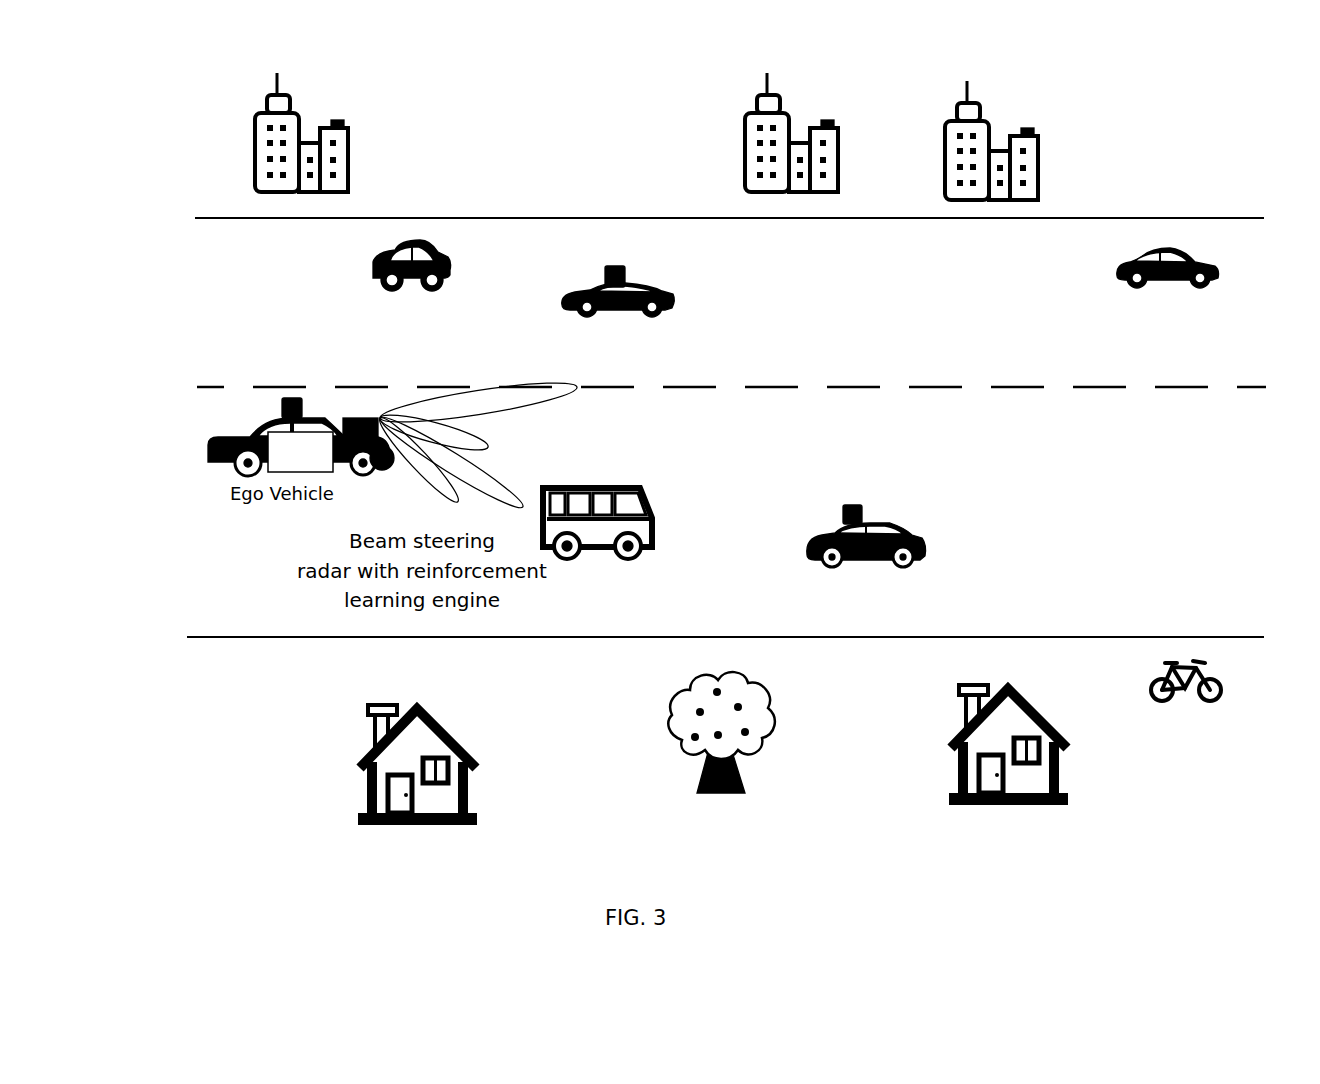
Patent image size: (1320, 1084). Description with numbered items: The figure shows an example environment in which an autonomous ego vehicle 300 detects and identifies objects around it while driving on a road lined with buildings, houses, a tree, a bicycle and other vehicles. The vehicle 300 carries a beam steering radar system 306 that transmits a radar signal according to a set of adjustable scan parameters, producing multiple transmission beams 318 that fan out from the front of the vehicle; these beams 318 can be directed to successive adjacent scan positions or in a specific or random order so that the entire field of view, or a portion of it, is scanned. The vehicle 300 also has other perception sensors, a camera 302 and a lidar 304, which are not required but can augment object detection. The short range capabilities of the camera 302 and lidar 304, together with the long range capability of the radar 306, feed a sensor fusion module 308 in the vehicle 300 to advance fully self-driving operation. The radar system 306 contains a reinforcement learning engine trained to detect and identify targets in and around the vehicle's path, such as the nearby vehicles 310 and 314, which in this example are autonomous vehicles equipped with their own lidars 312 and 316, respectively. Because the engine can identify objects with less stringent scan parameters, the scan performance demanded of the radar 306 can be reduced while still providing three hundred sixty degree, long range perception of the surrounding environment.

The vehicle 300 is at (212, 437).
The camera 302 is at (383, 466).
The lidar 304 is at (287, 400).
The beam steering radar system 306 is at (363, 427).
The sensor fusion module 308 is at (277, 458).
The vehicle 310 is at (570, 293).
The lidar 312 is at (625, 270).
The vehicle 314 is at (813, 545).
The lidar 316 is at (842, 520).
The transmission beams 318 is at (487, 447).